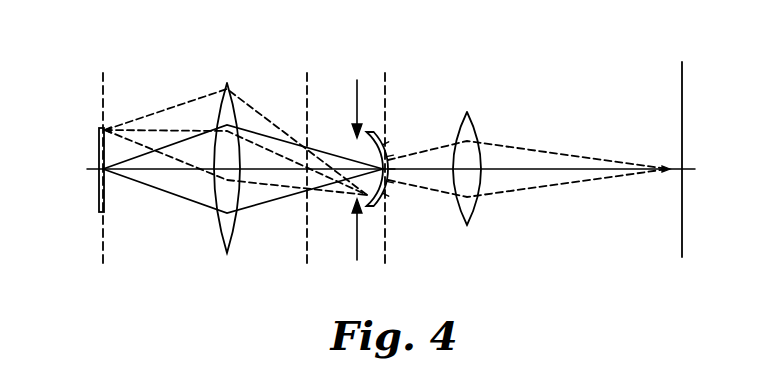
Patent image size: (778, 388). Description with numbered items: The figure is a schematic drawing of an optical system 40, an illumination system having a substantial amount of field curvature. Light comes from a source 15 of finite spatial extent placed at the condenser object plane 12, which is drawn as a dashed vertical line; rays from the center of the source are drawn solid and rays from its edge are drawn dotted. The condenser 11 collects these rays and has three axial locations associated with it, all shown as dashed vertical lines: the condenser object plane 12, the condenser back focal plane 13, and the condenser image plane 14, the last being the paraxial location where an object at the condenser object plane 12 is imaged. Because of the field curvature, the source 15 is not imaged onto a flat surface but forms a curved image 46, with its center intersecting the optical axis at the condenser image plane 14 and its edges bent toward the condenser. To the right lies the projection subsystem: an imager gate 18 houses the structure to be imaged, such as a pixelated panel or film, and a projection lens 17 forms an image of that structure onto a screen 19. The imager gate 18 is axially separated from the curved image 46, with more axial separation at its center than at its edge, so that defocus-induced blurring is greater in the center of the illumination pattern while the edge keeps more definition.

The optical system 40 is at (154, 64).
The condenser 11 is at (215, 240).
The condenser object plane 12 is at (103, 252).
The condenser back focal plane 13 is at (307, 248).
The condenser image plane 14 is at (385, 250).
The source 15 is at (105, 197).
The projection lens 17 is at (477, 130).
The imager gate 18 is at (360, 93).
The screen 19 is at (680, 100).
The curved image 46 is at (387, 198).